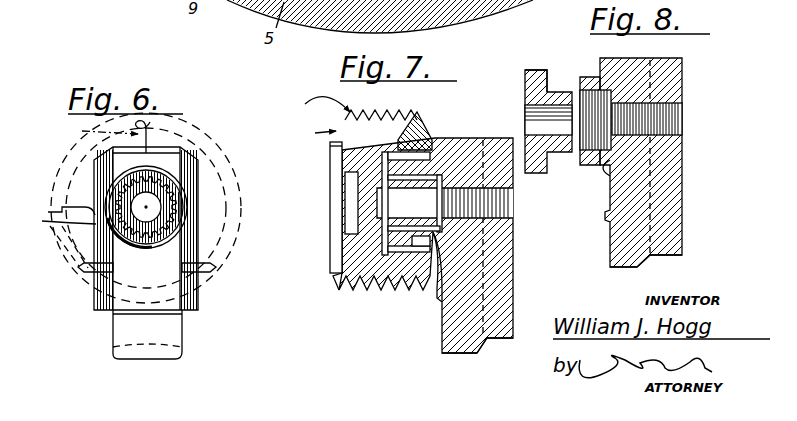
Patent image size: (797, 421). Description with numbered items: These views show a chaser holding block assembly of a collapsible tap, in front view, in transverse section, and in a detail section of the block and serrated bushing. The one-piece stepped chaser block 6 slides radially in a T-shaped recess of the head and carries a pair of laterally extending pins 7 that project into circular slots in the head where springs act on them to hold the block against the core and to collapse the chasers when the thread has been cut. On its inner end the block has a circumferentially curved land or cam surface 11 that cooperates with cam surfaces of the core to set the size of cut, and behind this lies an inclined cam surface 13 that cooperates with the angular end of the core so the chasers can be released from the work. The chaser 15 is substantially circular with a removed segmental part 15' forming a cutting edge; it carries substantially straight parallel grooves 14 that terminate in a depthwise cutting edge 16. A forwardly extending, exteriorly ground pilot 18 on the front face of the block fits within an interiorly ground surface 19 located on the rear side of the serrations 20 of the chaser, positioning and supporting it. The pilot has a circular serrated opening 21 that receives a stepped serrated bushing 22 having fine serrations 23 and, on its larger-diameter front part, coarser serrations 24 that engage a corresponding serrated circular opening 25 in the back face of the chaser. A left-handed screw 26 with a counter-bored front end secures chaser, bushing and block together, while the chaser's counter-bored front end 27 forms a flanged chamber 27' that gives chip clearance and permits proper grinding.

In FIG. 6, the chaser block 6 is at (133, 289).
In FIG. 7, the chaser block 6 is at (505, 284).
In FIG. 8, the chaser block 6 is at (678, 224).
In FIG. 6, the laterally extending pins 7 is at (80, 268).
In FIG. 6, the land or cam surface 11 is at (139, 359).
In FIG. 7, the land or cam surface 11 is at (456, 356).
In FIG. 8, the land or cam surface 11 is at (616, 270).
In FIG. 6, the inclined or cam surface 13 is at (160, 345).
In FIG. 7, the inclined or cam surface 13 is at (481, 350).
In FIG. 8, the inclined or cam surface 13 is at (642, 260).
In FIG. 7, the grooves 14 is at (317, 110).
In FIG. 6, the chaser 15 is at (51, 240).
In FIG. 7, the chaser 15 is at (320, 307).
In FIG. 6, the removed segmental part 15' is at (98, 134).
In FIG. 7, the removed segmental part 15' is at (313, 137).
In FIG. 6, the depthwise cutting edge 16 is at (183, 117).
In FIG. 6, the ring or annular flange or pilot 18 is at (104, 221).
In FIG. 7, the ring or annular flange or pilot 18 is at (420, 160).
In FIG. 8, the ring or annular flange or pilot 18 is at (598, 170).
In FIG. 7, the interiorly ground surface 19 is at (420, 234).
In FIG. 7, the serrations of the chaser 20 is at (405, 262).
In FIG. 6, the circular serrated opening 21 is at (116, 205).
In FIG. 7, the circular serrated opening 21 is at (441, 148).
In FIG. 8, the circular serrated opening 21 is at (614, 103).
In FIG. 7, the stepped serrated bushing 22 is at (395, 234).
In FIG. 8, the stepped serrated bushing 22 is at (541, 100).
In FIG. 7, the serrations of the bushing 23 is at (482, 224).
In FIG. 8, the serrations of the bushing 23 is at (562, 90).
In FIG. 7, the serrations of the larger bushing part 24 is at (400, 116).
In FIG. 8, the serrations of the larger bushing part 24 is at (536, 70).
In FIG. 7, the serrated circular opening 25 is at (404, 158).
In FIG. 7, the screw or bolt 26 is at (445, 203).
In FIG. 6, the counter-bore 27 is at (160, 208).
In FIG. 7, the counter-bore 27 is at (315, 207).
In FIG. 6, the flanged chamber 27' is at (171, 208).